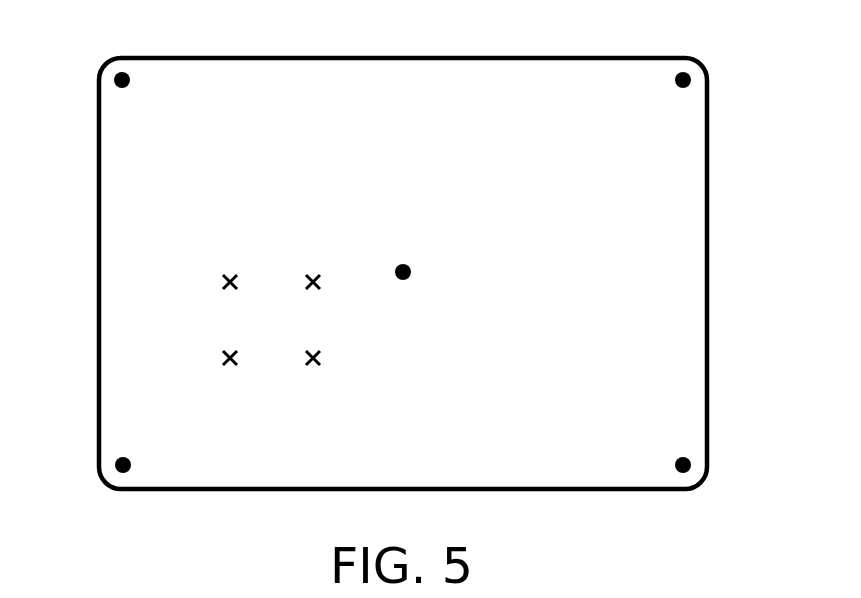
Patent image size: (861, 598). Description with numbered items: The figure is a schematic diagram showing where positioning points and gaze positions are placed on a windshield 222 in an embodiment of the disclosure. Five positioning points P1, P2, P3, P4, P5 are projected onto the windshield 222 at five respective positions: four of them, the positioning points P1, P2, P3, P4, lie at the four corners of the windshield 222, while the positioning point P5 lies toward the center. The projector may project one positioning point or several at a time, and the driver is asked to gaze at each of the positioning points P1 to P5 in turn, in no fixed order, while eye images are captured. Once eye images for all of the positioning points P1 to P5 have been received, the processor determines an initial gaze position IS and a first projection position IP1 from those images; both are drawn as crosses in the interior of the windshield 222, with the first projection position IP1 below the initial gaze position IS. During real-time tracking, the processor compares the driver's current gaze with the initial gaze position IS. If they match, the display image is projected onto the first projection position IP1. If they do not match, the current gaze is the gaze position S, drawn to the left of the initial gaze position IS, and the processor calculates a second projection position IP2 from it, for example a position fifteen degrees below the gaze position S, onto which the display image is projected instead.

The windshield 222 is at (620, 57).
The positioning point P1 is at (130, 81).
The positioning point P2 is at (117, 458).
The positioning point P3 is at (689, 88).
The positioning point P4 is at (690, 461).
The positioning point P5 is at (407, 264).
The gaze position S is at (230, 273).
The initial gaze position IS is at (313, 271).
The first projection position IP1 is at (320, 357).
The second projection position IP2 is at (229, 348).